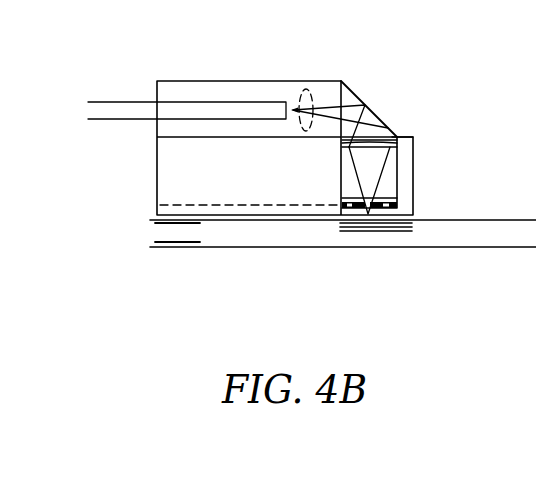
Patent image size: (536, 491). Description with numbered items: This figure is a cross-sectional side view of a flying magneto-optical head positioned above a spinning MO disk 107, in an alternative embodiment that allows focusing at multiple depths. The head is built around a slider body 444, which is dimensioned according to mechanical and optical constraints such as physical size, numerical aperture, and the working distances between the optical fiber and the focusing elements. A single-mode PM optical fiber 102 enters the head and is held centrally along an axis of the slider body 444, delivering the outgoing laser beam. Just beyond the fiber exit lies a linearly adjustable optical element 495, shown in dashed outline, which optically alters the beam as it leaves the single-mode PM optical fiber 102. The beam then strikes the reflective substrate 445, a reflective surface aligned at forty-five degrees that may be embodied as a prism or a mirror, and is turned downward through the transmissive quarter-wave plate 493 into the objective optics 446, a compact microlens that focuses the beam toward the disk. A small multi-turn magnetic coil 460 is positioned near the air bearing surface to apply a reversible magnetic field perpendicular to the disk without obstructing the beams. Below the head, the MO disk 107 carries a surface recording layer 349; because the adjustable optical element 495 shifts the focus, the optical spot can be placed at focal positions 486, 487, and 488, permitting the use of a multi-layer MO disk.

The single-mode PM optical fiber 102 is at (193, 72).
The slider body 444 is at (285, 122).
The linearly adjustable optical element 495 is at (334, 81).
The reflective substrate 445 is at (383, 92).
The transmissive quarter-wave plate 493 is at (446, 112).
The objective optics 446 is at (417, 174).
The magnetic coil 460 is at (417, 188).
The spinning MO disk 107 is at (343, 259).
The surface recording layer 349 is at (133, 232).
The focal position 486 is at (357, 253).
The focal position 487 is at (359, 272).
The focal position 488 is at (364, 289).